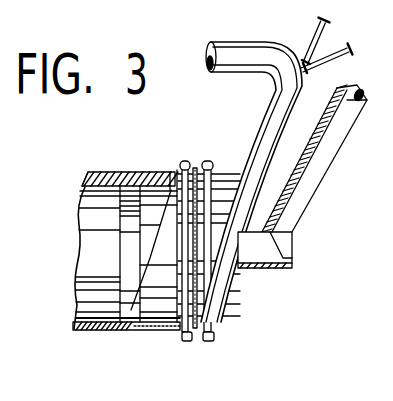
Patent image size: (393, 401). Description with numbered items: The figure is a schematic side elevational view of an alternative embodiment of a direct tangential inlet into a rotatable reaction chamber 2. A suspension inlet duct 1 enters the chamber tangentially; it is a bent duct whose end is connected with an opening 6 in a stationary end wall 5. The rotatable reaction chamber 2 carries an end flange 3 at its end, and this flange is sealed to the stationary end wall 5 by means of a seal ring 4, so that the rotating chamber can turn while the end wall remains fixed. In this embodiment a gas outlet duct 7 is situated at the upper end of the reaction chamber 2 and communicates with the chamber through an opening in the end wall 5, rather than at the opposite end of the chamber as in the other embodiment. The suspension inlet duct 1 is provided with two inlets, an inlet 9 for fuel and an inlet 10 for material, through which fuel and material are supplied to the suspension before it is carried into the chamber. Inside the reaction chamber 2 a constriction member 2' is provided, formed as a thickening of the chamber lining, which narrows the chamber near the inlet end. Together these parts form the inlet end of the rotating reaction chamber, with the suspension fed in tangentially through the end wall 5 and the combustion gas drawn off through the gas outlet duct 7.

The suspension inlet duct 1 is at (265, 48).
The rotatable reaction chamber 2 is at (126, 275).
The constriction member 2' is at (96, 161).
The end flange 3 is at (186, 160).
The seal ring 4 is at (197, 168).
The stationary end wall 5 is at (207, 166).
The opening 6 is at (231, 266).
The gas outlet duct 7 is at (325, 141).
The inlet for fuel 9 is at (322, 57).
The inlet for material 10 is at (317, 24).